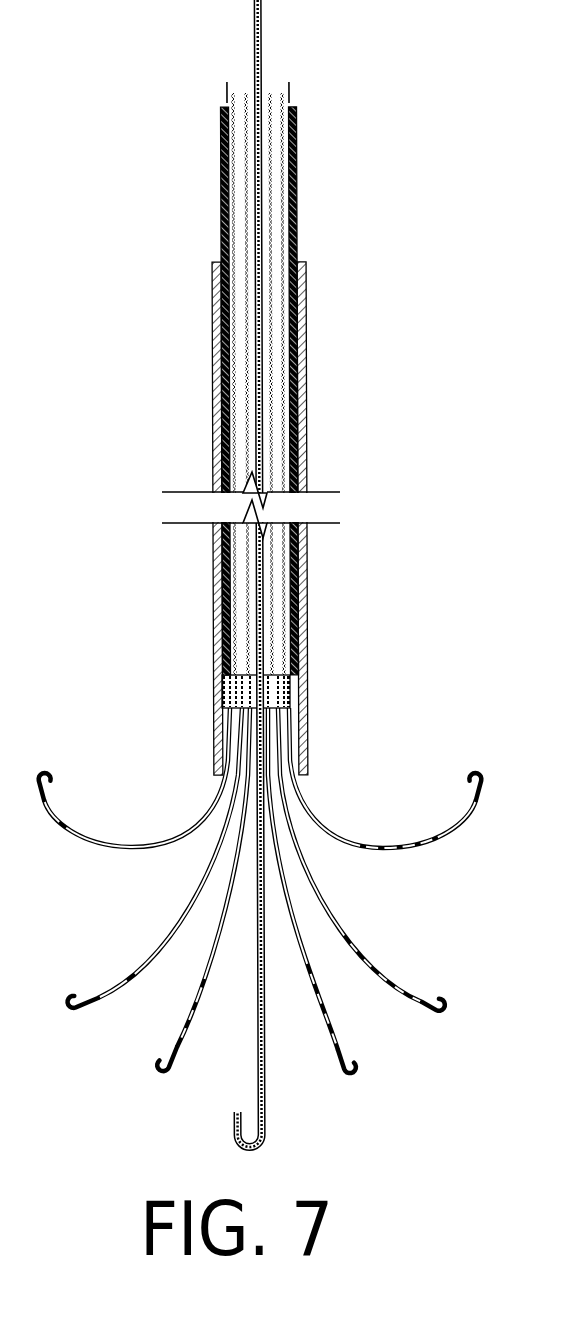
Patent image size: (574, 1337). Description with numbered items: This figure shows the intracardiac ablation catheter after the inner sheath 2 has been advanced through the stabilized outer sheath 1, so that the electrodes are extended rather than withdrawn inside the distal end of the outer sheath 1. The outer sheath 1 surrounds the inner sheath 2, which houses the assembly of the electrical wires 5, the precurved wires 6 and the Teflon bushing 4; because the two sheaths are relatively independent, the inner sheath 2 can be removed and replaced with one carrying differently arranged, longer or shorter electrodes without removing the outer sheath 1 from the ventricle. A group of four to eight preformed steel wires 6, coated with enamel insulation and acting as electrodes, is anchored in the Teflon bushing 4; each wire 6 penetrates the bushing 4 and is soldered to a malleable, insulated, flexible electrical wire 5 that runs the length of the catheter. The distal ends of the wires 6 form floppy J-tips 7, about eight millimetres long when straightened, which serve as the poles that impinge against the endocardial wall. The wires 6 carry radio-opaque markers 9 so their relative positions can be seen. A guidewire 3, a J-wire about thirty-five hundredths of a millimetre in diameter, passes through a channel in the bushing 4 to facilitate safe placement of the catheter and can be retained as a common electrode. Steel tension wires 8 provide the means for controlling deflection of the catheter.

The outer sheath 1 is at (211, 636).
The inner sheath 2 is at (223, 193).
The guidewire 3 is at (255, 1088).
The Teflon bushing 4 is at (302, 698).
The electrical wire 5 is at (277, 243).
The precurved wire 6 is at (183, 912).
The J-tip 7 is at (353, 1063).
The tension wire 8 is at (289, 88).
The radio-opaque marker 9 is at (457, 817).